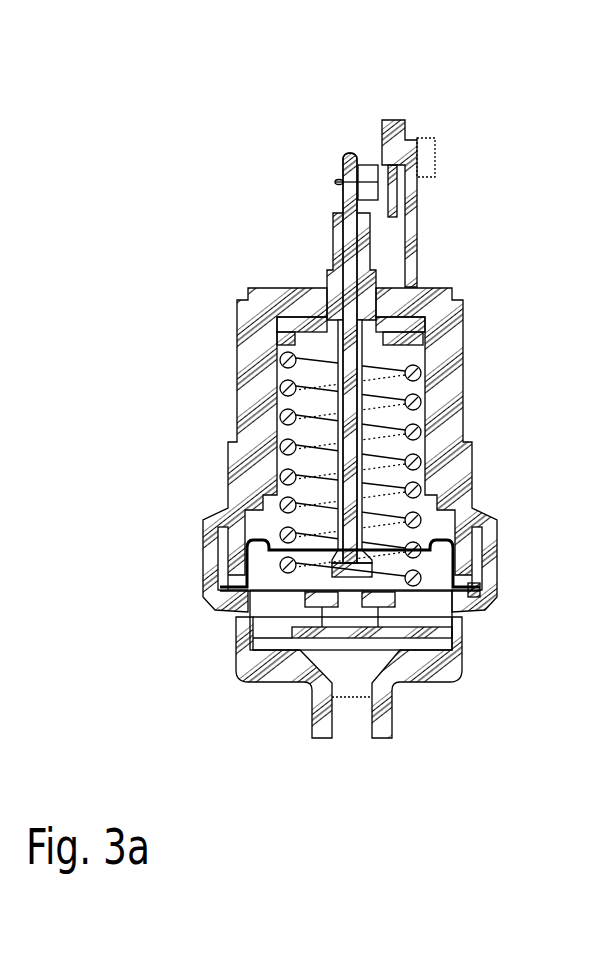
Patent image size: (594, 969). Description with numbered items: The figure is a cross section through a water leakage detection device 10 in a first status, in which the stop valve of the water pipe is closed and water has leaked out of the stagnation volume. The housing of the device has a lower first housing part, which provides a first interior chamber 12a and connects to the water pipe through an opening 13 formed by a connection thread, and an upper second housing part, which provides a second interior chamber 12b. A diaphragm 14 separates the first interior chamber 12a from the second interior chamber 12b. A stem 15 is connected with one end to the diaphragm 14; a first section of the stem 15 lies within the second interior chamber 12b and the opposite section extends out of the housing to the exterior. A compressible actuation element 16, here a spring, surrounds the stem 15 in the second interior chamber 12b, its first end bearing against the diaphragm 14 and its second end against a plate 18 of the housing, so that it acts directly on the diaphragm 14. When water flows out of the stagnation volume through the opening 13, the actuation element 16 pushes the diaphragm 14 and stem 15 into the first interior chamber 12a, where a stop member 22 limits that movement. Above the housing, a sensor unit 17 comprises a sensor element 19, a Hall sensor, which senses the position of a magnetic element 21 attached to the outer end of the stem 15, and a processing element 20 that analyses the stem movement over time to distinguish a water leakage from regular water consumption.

The water leakage detection device 10 is at (350, 428).
The first interior chamber 12a is at (272, 623).
The second interior chamber 12b is at (262, 521).
The opening 13 is at (350, 728).
The diaphragm 14 is at (458, 560).
The stem 15 is at (348, 445).
The compressible actuation element 16 is at (279, 390).
The sensor unit 17 is at (413, 170).
The plate 18 is at (410, 341).
The sensor element 19 is at (392, 130).
The processing element 20 is at (426, 158).
The magnetic element 21 is at (367, 168).
The stop member 22 is at (438, 633).